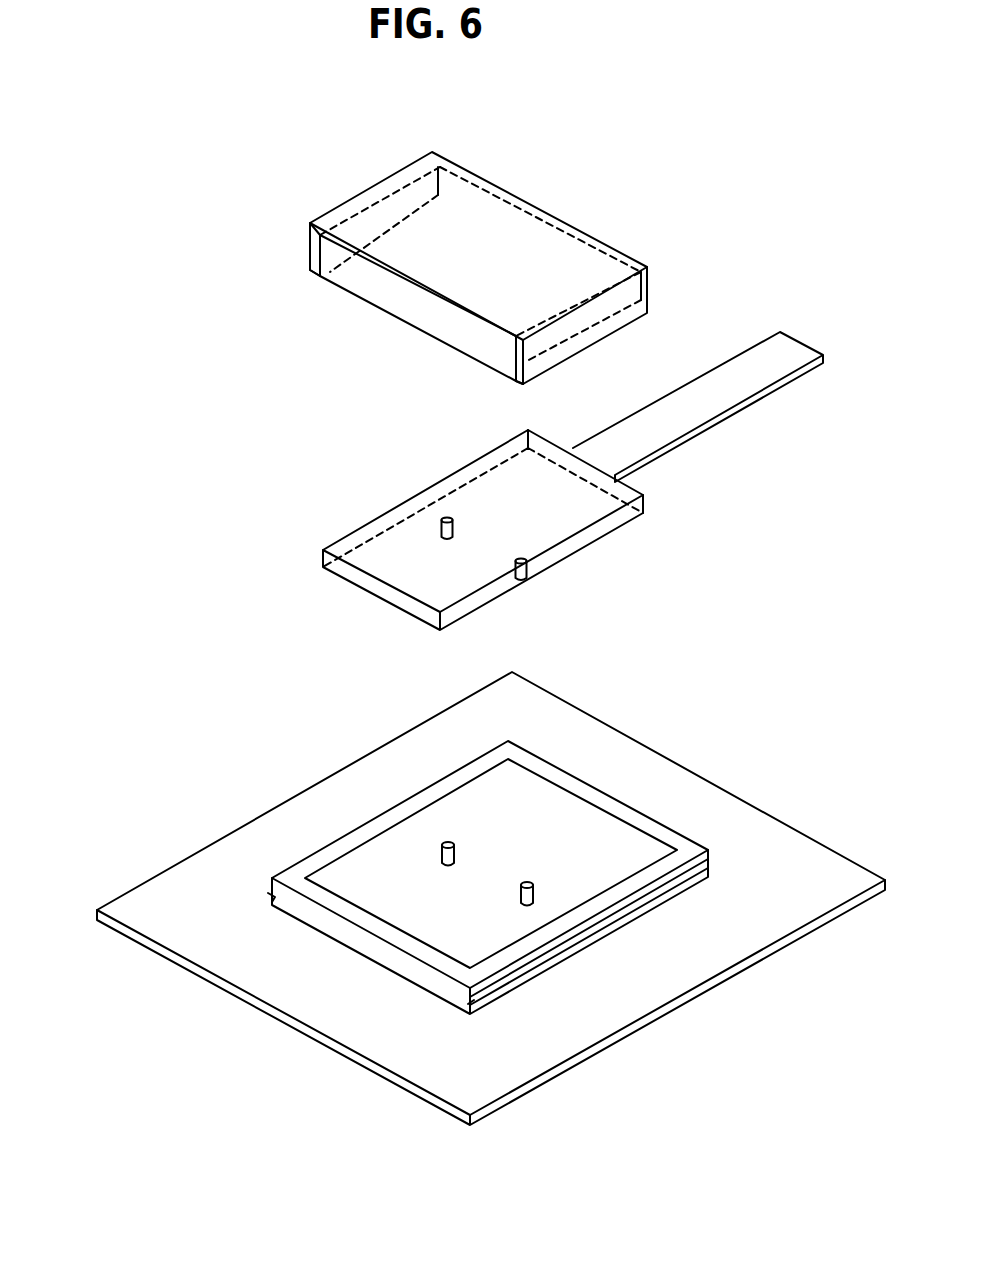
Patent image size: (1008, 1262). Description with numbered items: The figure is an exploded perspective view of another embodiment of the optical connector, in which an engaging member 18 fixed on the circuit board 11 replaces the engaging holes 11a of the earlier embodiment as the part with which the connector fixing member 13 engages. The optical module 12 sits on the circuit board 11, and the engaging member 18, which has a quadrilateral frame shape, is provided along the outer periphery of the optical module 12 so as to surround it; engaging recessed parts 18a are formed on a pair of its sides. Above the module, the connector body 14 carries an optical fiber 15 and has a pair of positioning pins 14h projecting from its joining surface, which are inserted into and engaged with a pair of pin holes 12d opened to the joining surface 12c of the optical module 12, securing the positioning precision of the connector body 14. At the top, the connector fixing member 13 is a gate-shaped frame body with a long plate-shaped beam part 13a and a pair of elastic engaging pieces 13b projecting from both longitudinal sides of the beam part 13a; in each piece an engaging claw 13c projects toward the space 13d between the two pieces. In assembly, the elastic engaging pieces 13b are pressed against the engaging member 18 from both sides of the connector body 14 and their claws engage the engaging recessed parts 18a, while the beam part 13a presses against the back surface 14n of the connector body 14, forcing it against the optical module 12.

The circuit board 11 is at (491, 898).
The engaging holes 11a is at (712, 948).
The optical module 12 is at (507, 812).
The joining surface 12c is at (603, 837).
The pin holes 12d is at (448, 842).
The connector fixing member 13 is at (477, 277).
The beam part 13a is at (530, 200).
The elastic engaging pieces 13b is at (308, 256).
The engaging claw 13c is at (338, 284).
The space 13d is at (410, 316).
The connector body 14 is at (492, 530).
The positioning pins 14h is at (438, 528).
The back surface 14n is at (482, 502).
The optical fiber 15 is at (764, 337).
The engaging member 18 is at (434, 910).
The engaging recessed parts 18a is at (268, 891).